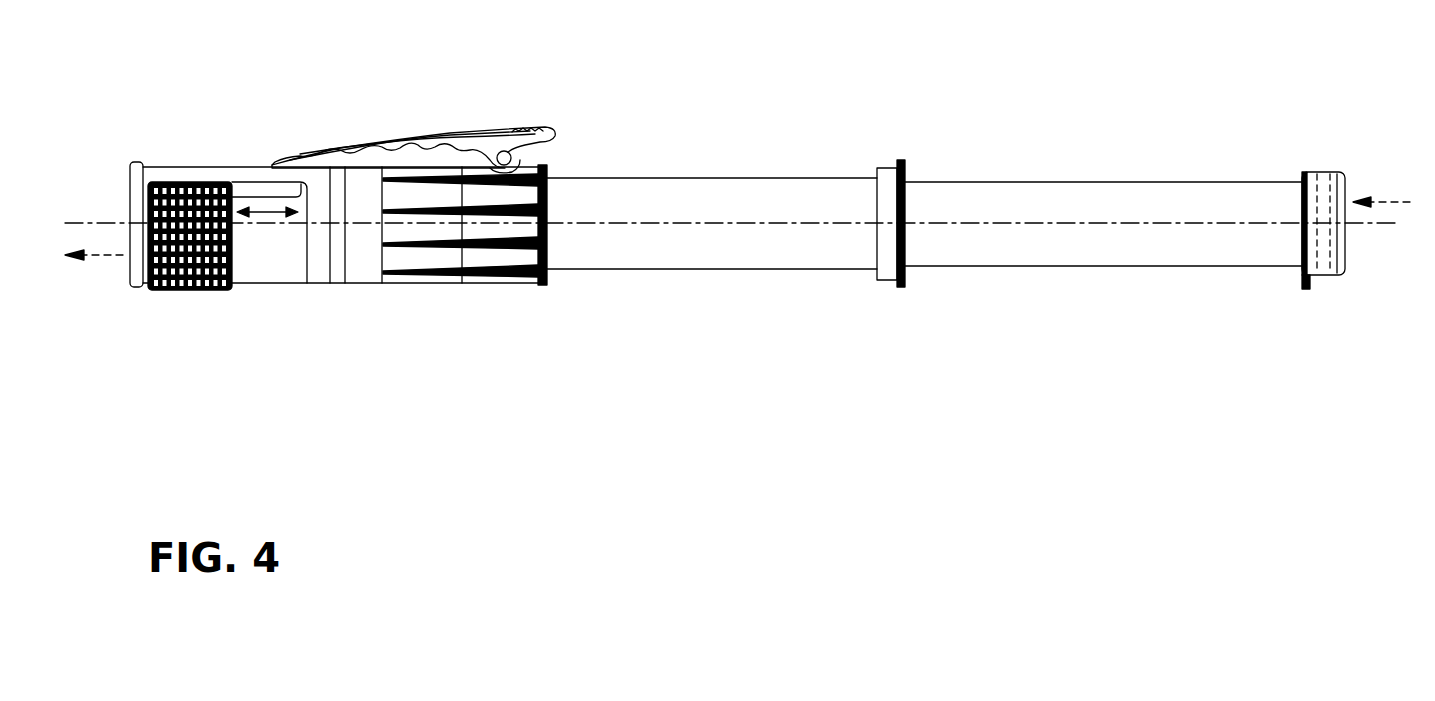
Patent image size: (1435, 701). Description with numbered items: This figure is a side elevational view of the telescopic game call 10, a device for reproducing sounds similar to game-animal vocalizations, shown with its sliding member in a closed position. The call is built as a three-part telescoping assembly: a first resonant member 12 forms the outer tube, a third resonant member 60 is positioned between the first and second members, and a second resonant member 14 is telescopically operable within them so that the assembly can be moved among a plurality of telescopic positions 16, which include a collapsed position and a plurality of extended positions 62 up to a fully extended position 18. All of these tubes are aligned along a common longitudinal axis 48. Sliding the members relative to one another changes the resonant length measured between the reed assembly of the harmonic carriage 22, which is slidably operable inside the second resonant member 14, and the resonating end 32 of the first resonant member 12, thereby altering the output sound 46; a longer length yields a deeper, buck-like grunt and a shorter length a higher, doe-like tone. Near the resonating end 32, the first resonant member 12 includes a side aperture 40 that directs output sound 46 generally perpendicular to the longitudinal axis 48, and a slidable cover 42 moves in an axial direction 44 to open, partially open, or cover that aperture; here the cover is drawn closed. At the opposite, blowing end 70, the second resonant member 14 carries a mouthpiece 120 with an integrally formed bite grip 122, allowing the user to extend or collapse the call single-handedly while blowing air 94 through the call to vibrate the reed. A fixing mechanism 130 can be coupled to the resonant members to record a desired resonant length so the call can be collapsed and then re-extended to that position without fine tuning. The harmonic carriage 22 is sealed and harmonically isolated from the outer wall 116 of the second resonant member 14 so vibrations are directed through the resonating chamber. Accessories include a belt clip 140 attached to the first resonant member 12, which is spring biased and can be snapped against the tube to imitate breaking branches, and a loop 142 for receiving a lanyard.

The telescopic game call 10 is at (688, 112).
The first resonant member 12 is at (226, 165).
The second resonant member 14 is at (1141, 182).
The telescopic positions 16 is at (785, 175).
The fully extended position 18 is at (542, 289).
The harmonic carriage 22 is at (1066, 228).
The resonating end 32 is at (130, 188).
The side aperture 40 is at (233, 256).
The slidable cover 42 is at (178, 291).
The axial direction 44 is at (258, 210).
The output sound 46 is at (95, 257).
The longitudinal axis 48 is at (647, 224).
The third resonant member 60 is at (758, 272).
The extended positions 62 is at (951, 272).
The blowing end 70 is at (1346, 246).
The air 94 is at (1412, 195).
The outer wall 116 is at (1050, 182).
The mouthpiece 120 is at (1342, 180).
The bite grip 122 is at (1322, 276).
The fixing mechanism 130 is at (553, 168).
The belt clip 140 is at (448, 134).
The loop 142 is at (1303, 290).